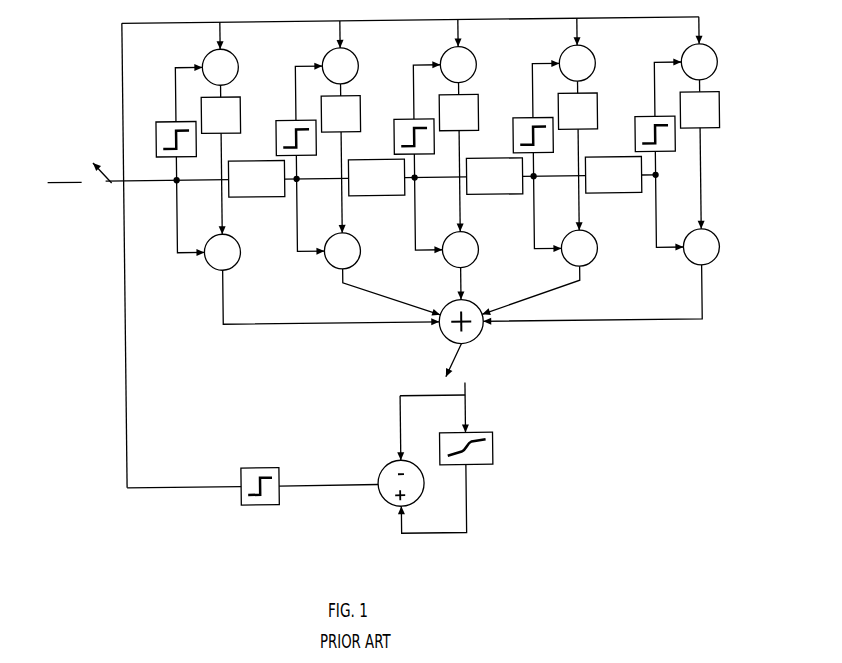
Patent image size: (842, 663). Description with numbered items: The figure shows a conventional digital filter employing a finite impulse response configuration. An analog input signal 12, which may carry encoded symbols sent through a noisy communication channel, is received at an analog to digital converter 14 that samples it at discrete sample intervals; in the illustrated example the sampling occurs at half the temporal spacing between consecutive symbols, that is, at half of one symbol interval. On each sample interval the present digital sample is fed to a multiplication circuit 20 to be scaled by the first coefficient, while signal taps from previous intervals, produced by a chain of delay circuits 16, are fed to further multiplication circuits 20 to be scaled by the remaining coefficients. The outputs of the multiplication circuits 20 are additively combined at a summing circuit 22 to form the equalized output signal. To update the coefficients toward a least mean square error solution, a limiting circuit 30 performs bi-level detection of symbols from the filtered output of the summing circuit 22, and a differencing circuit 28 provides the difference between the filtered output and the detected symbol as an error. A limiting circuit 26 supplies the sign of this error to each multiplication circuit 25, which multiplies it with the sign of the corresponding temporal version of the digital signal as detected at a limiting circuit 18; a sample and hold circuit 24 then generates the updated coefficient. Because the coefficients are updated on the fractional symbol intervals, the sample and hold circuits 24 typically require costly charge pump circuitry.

The analog input signal 12 is at (64, 178).
The analog to digital converter 14 is at (101, 188).
The delay circuit 16 is at (263, 196).
The limiting circuit 18 is at (159, 121).
The multiplication circuit 20 is at (239, 258).
The summing circuit 22 is at (478, 338).
The sample and hold circuit 24 is at (243, 99).
The multiplication circuit 25 is at (238, 56).
The limiting circuit 26 is at (236, 496).
The differencing circuit 28 is at (383, 470).
The limiting circuit 30 is at (491, 444).